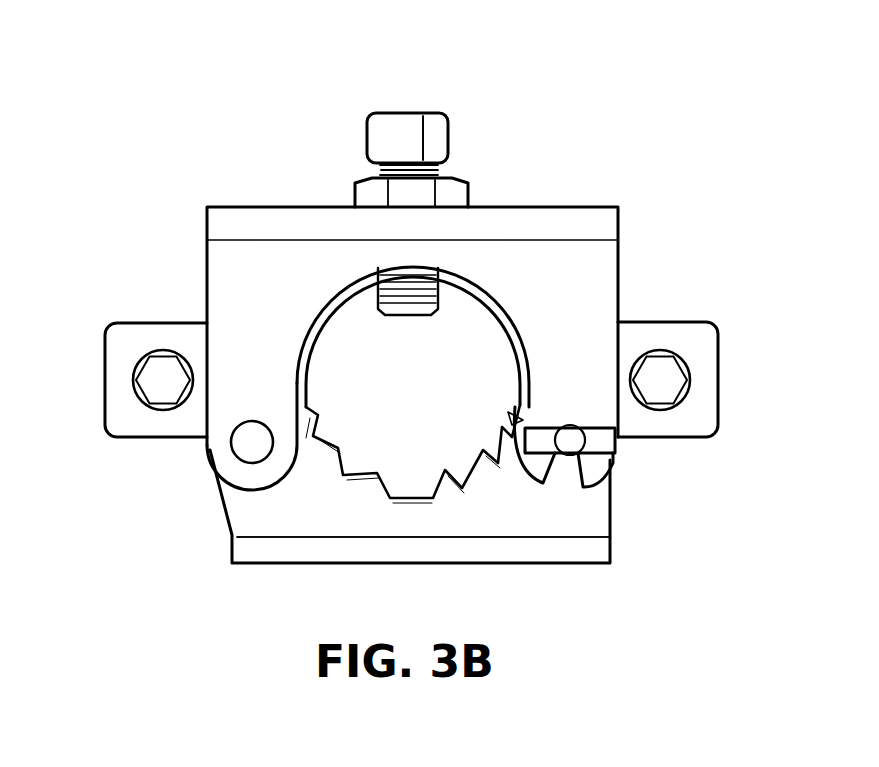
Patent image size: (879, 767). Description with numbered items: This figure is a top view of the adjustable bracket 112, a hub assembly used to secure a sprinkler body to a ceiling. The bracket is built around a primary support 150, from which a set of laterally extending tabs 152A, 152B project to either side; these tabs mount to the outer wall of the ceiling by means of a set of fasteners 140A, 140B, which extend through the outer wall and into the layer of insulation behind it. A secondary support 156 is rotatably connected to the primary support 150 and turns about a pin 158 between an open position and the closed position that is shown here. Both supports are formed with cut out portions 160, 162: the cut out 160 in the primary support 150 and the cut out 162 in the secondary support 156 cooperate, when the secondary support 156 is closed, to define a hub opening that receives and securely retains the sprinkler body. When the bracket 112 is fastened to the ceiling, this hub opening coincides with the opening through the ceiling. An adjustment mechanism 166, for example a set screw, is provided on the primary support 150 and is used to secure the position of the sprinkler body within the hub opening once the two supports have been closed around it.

The adjustable bracket 112 is at (672, 152).
The primary support 150 is at (236, 218).
The laterally extending tab 152A is at (140, 337).
The laterally extending tab 152B is at (688, 335).
The fastener 140A is at (152, 392).
The fastener 140B is at (652, 395).
The secondary support 156 is at (558, 515).
The pin 158 is at (249, 447).
The cut out portion 160 is at (463, 352).
The cut out portion 162 is at (564, 447).
The adjustment mechanism 166 is at (385, 112).